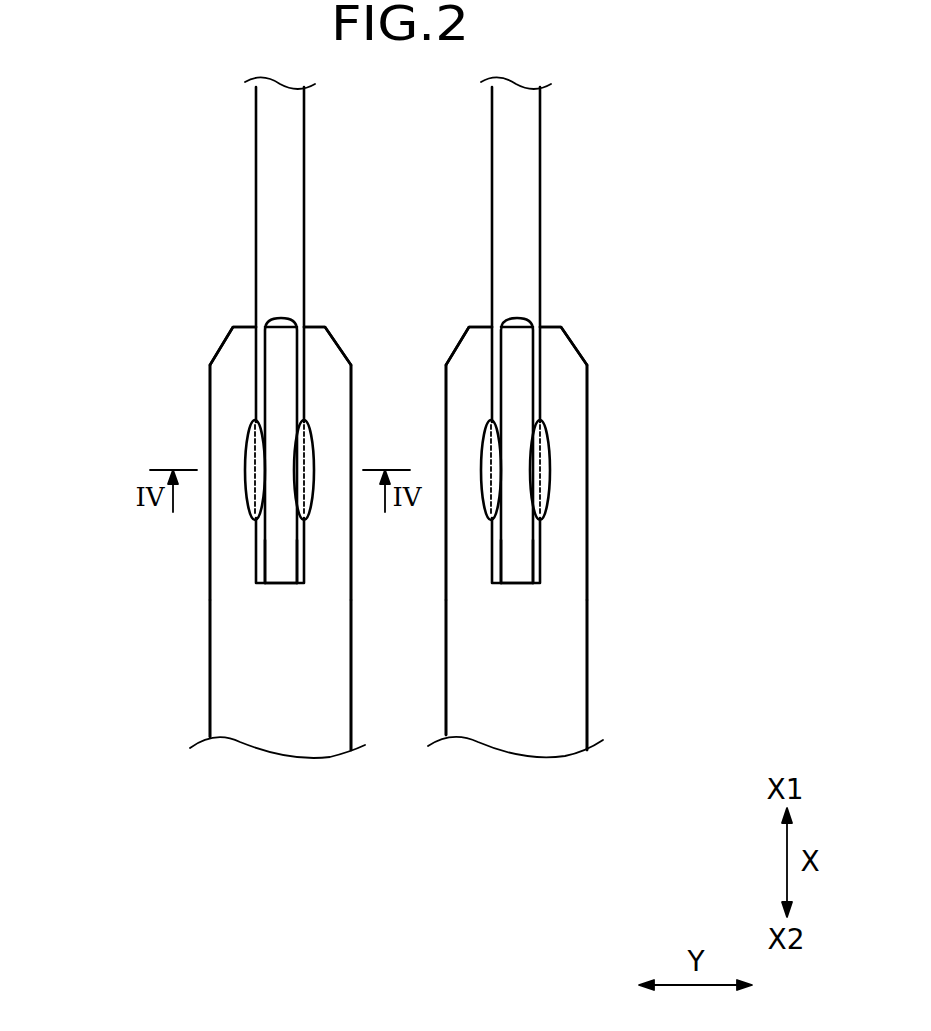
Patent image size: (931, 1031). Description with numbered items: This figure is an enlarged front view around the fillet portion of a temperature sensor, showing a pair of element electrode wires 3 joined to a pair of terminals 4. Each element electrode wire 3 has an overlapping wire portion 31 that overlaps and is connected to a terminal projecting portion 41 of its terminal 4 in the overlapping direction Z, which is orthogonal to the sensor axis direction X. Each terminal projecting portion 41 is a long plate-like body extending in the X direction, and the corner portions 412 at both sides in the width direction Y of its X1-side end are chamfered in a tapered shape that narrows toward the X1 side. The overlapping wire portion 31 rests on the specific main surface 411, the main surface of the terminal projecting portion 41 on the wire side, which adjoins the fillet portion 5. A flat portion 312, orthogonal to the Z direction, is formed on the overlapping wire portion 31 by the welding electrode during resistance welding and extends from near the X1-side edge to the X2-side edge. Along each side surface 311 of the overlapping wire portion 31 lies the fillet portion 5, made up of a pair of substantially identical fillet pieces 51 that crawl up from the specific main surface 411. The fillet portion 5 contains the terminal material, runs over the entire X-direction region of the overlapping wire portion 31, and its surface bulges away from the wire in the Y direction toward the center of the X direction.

The element electrode wire 3 is at (272, 168).
The overlapping wire portion 31 is at (253, 387).
The side surface 311 is at (257, 552).
The flat portion 312 is at (280, 563).
The terminal 4 is at (233, 718).
The terminal projecting portion 41 is at (228, 612).
The specific main surface 411 is at (225, 435).
The corner portion 412 is at (233, 330).
The fillet portion 5 is at (247, 493).
The fillet piece 51 is at (245, 478).